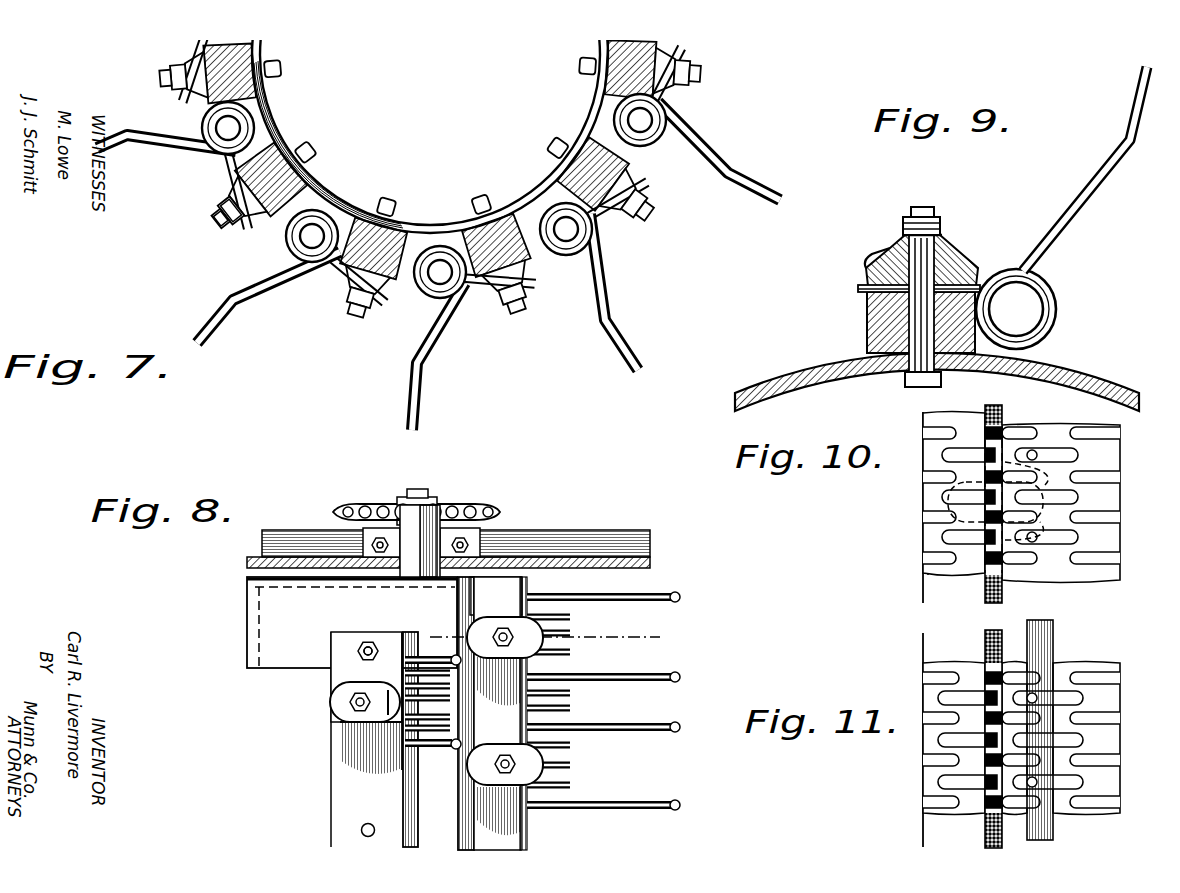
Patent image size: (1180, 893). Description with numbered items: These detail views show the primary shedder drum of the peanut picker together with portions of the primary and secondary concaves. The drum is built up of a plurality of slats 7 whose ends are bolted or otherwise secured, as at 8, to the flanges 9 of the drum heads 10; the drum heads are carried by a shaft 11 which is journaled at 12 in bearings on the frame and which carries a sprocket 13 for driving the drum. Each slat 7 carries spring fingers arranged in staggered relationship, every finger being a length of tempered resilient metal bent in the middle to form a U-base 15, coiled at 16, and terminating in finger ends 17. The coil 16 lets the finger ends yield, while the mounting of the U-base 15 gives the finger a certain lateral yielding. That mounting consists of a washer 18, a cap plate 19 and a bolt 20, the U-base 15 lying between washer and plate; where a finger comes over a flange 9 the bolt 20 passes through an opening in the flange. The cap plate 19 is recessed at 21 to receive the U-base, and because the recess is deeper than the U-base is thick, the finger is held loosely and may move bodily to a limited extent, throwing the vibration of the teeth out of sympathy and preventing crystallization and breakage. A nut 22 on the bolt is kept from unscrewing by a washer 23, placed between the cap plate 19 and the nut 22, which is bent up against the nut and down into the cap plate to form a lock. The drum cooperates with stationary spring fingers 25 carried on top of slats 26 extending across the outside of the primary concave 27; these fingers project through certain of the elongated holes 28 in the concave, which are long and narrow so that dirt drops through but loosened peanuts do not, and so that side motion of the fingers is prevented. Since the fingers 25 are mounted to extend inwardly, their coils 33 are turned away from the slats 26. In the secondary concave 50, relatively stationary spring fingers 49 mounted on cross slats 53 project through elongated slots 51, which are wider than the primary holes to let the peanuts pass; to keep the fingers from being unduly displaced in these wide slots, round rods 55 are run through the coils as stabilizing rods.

In FIG. 7, the slats 7 is at (497, 228).
In FIG. 9, the slats 7 is at (867, 337).
In FIG. 8, the slats 7 is at (331, 840).
In FIG. 7, the bolted ends 8 is at (485, 200).
In FIG. 8, the bolted ends 8 is at (358, 657).
In FIG. 7, the flanges 9 is at (333, 200).
In FIG. 9, the flanges 9 is at (775, 384).
In FIG. 8, the flanges 9 is at (278, 660).
In FIG. 7, the drum heads 10 is at (437, 184).
In FIG. 8, the drum heads 10 is at (241, 602).
In FIG. 8, the shaft 11 is at (425, 479).
In FIG. 8, the journal 12 is at (425, 505).
In FIG. 8, the sprocket 13 is at (463, 505).
In FIG. 7, the U-base 15 is at (230, 192).
In FIG. 9, the U-base 15 is at (866, 282).
In FIG. 8, the U-base 15 is at (397, 733).
In FIG. 7, the coil 16 is at (222, 120).
In FIG. 9, the coil 16 is at (1057, 312).
In FIG. 8, the coil 16 is at (400, 742).
In FIG. 7, the finger ends 17 is at (110, 145).
In FIG. 9, the finger ends 17 is at (1140, 110).
In FIG. 8, the finger ends 17 is at (437, 660).
In FIG. 7, the washer 18 is at (232, 186).
In FIG. 9, the washer 18 is at (868, 293).
In FIG. 7, the cap plate 19 is at (220, 202).
In FIG. 9, the cap plate 19 is at (890, 262).
In FIG. 8, the cap plate 19 is at (335, 710).
In FIG. 7, the bolt 20 is at (212, 220).
In FIG. 9, the bolt 20 is at (915, 207).
In FIG. 8, the bolt 20 is at (345, 702).
In FIG. 9, the recess 21 is at (905, 270).
In FIG. 7, the nut 22 is at (222, 224).
In FIG. 9, the nut 22 is at (905, 222).
In FIG. 8, the nut 22 is at (605, 587).
In FIG. 7, the washer 23 is at (240, 224).
In FIG. 8, the washer 23 is at (520, 597).
In FIG. 9, the stationary spring fingers 25 is at (945, 238).
In FIG. 10, the stationary spring fingers 25 is at (1034, 455).
In FIG. 10, the slats 26 is at (923, 416).
In FIG. 9, the primary concave 27 is at (882, 244).
In FIG. 10, the primary concave 27 is at (1115, 456).
In FIG. 10, the elongated holes 28 is at (1020, 430).
In FIG. 10, the coils 33 is at (1060, 500).
In FIG. 11, the stationary spring fingers 49 is at (1090, 692).
In FIG. 11, the secondary concave 50 is at (1065, 661).
In FIG. 11, the elongated slots 51 is at (1095, 666).
In FIG. 11, the cross slats 53 is at (923, 652).
In FIG. 11, the round rods 55 is at (1050, 632).